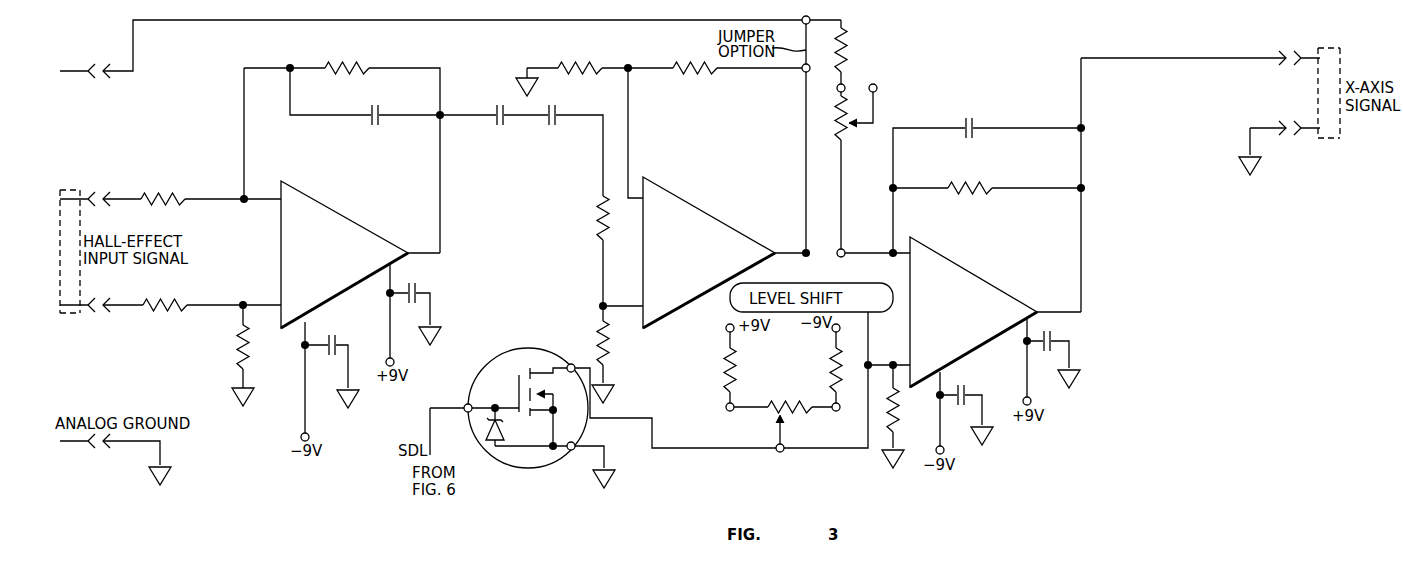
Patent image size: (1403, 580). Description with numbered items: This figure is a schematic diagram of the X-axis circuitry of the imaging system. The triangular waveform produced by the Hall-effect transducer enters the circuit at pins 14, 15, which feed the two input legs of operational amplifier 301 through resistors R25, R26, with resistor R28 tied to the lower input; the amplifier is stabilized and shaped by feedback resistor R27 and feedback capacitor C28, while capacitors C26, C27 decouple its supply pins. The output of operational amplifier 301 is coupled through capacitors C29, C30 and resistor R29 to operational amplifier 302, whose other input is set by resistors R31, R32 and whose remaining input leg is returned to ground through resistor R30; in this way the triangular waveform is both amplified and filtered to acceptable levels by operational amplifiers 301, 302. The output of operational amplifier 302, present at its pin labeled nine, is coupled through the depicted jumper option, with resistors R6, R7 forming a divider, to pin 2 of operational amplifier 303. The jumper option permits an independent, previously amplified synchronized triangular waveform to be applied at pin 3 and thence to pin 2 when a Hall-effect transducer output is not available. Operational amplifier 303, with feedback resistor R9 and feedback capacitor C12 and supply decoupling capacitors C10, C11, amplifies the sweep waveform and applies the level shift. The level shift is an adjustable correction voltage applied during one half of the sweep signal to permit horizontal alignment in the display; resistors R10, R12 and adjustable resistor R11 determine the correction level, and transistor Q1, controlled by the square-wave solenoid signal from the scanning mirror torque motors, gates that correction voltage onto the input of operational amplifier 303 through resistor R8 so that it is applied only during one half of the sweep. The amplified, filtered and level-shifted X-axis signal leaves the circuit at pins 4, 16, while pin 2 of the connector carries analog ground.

The operational amplifier 301 is at (339, 254).
The operational amplifier 302 is at (702, 254).
The operational amplifier 303 is at (962, 315).
The transistor Q1 is at (522, 350).
The resistor R6 is at (852, 66).
The resistor R7 is at (840, 126).
The resistor R8 is at (896, 418).
The resistor R9 is at (978, 182).
The resistor R10 is at (724, 368).
The resistor R11 is at (786, 394).
The resistor R12 is at (832, 374).
The resistor R25 is at (170, 194).
The resistor R26 is at (172, 300).
The resistor R27 is at (343, 63).
The resistor R28 is at (236, 352).
The resistor R29 is at (597, 220).
The resistor R30 is at (612, 354).
The resistor R31 is at (574, 62).
The resistor R32 is at (688, 76).
The capacitor C10 is at (964, 390).
The capacitor C11 is at (1050, 336).
The capacitor C12 is at (973, 122).
The capacitor C26 is at (336, 338).
The capacitor C27 is at (416, 286).
The capacitor C28 is at (377, 124).
The capacitor C29 is at (496, 124).
The capacitor C30 is at (555, 124).
The pin 3 is at (85, 61).
The pin 15 is at (85, 189).
The pin 14 is at (85, 296).
The pin 2 is at (85, 450).
The pin 4 is at (1299, 48).
The pin 16 is at (1299, 118).